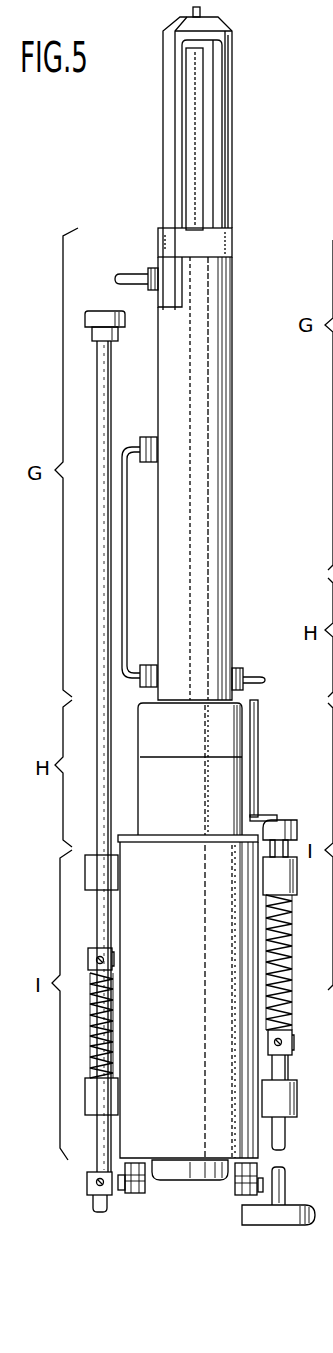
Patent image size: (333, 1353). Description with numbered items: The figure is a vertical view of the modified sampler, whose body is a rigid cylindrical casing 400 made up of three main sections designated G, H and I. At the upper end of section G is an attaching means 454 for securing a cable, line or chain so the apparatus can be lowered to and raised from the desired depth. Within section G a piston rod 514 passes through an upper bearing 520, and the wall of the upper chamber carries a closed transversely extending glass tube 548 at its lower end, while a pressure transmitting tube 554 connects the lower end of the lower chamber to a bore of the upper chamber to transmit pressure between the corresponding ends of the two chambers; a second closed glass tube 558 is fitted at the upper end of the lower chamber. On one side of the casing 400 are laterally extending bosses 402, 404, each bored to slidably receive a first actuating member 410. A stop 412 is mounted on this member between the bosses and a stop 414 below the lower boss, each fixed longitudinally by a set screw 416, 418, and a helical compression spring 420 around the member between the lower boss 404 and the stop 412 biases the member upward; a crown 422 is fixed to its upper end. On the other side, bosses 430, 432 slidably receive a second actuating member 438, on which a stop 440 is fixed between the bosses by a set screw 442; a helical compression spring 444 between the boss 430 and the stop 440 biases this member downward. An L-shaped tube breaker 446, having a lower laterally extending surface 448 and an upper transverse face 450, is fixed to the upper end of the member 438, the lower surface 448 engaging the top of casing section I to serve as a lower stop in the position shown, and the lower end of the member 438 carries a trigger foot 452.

The casing 400 is at (273, 661).
The boss 402 is at (85, 857).
The boss 404 is at (105, 1098).
The first actuating member 410 is at (96, 653).
The stop 412 is at (88, 955).
The stop 414 is at (87, 1180).
The set screw 416 is at (112, 958).
The set screw 418 is at (93, 1192).
The helical compression spring 420 is at (92, 998).
The crown 422 is at (115, 330).
The boss 430 is at (282, 881).
The boss 432 is at (296, 1112).
The second actuating member 438 is at (284, 1068).
The stop 440 is at (290, 1052).
The set screw 442 is at (282, 1042).
The helical compression spring 444 is at (290, 955).
The L-shaped tube breaker 446 is at (268, 815).
The lower laterally extending surface 448 is at (283, 837).
The upper transverse face 450 is at (258, 702).
The trigger foot 452 is at (313, 1200).
The attaching means 454 is at (232, 24).
The piston rod 514 is at (197, 178).
The upper bearing 520 is at (218, 245).
The glass tube 548 is at (246, 668).
The pressure transmitting tube 554 is at (128, 527).
The glass tube 558 is at (136, 274).